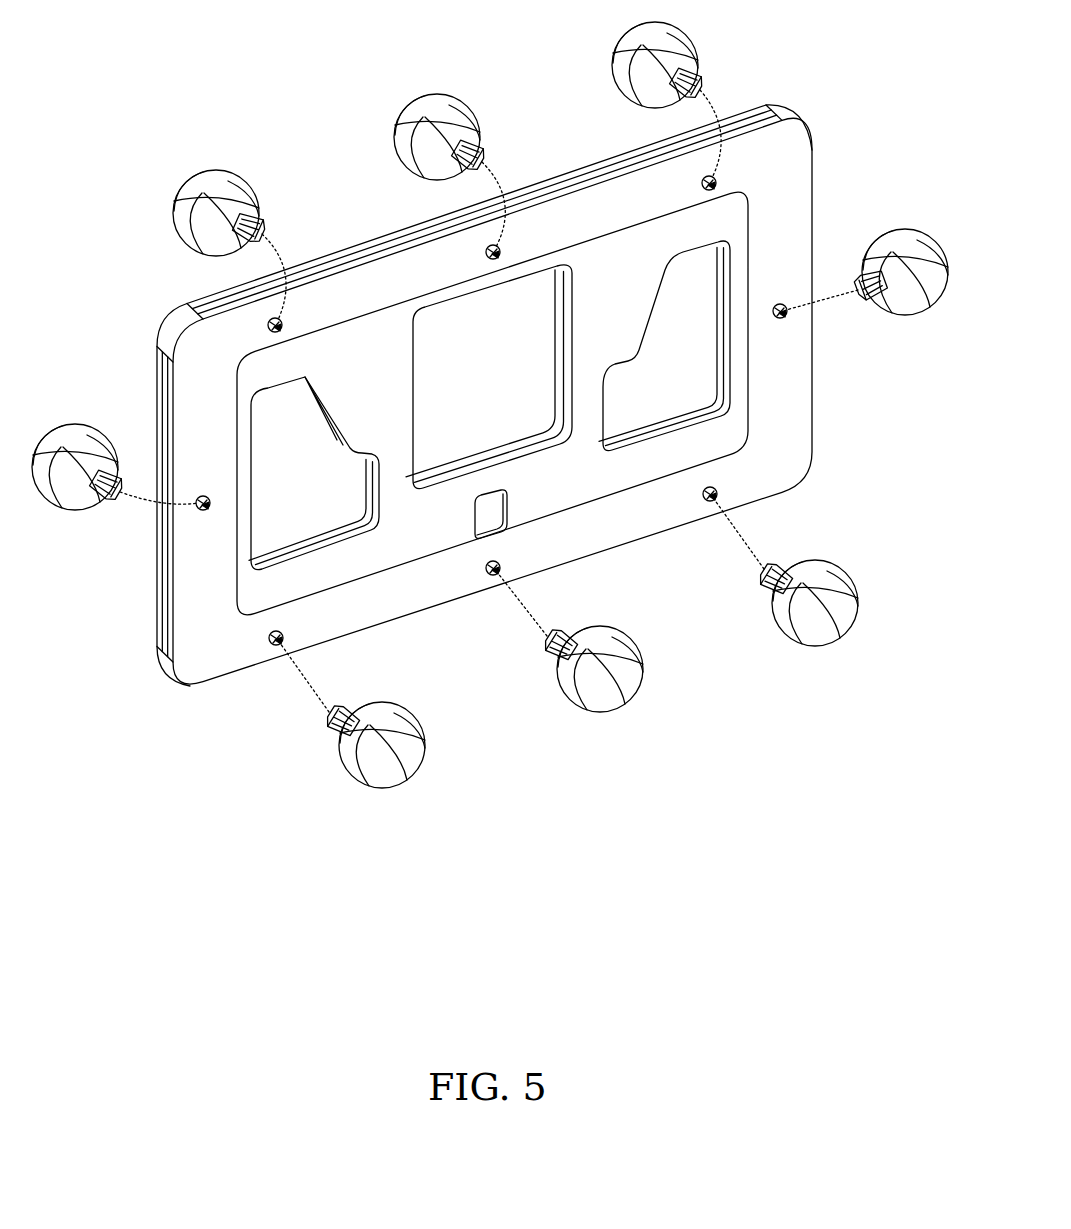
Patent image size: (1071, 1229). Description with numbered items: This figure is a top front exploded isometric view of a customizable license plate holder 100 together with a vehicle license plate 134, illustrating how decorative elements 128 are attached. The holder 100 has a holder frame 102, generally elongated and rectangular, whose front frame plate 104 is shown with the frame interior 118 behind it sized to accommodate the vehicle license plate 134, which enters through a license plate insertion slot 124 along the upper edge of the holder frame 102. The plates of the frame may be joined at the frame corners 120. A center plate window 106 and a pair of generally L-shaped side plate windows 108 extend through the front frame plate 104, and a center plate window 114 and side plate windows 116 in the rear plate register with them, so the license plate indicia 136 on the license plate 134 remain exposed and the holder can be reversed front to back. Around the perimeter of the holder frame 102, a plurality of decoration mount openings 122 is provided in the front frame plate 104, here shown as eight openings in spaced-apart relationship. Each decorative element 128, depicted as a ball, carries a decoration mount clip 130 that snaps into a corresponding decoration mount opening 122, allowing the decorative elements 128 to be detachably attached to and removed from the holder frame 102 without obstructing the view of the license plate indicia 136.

The customizable license plate holder 100 is at (283, 75).
The holder frame 102 is at (457, 603).
The front frame plate 104 is at (606, 550).
The center plate window 106 is at (414, 345).
The side plate windows 108 is at (666, 283).
The center plate window 114 is at (549, 297).
The side plate windows 116 is at (718, 312).
The frame interior 118 is at (161, 407).
The frame corners 120 is at (787, 115).
The decoration mount openings 122 is at (702, 186).
The license plate insertion slot 124 is at (609, 172).
The decorative elements 128 is at (617, 57).
The decoration mount clip 130 is at (486, 148).
The vehicle license plate 134 is at (455, 322).
The license plate indicia 136 is at (318, 490).